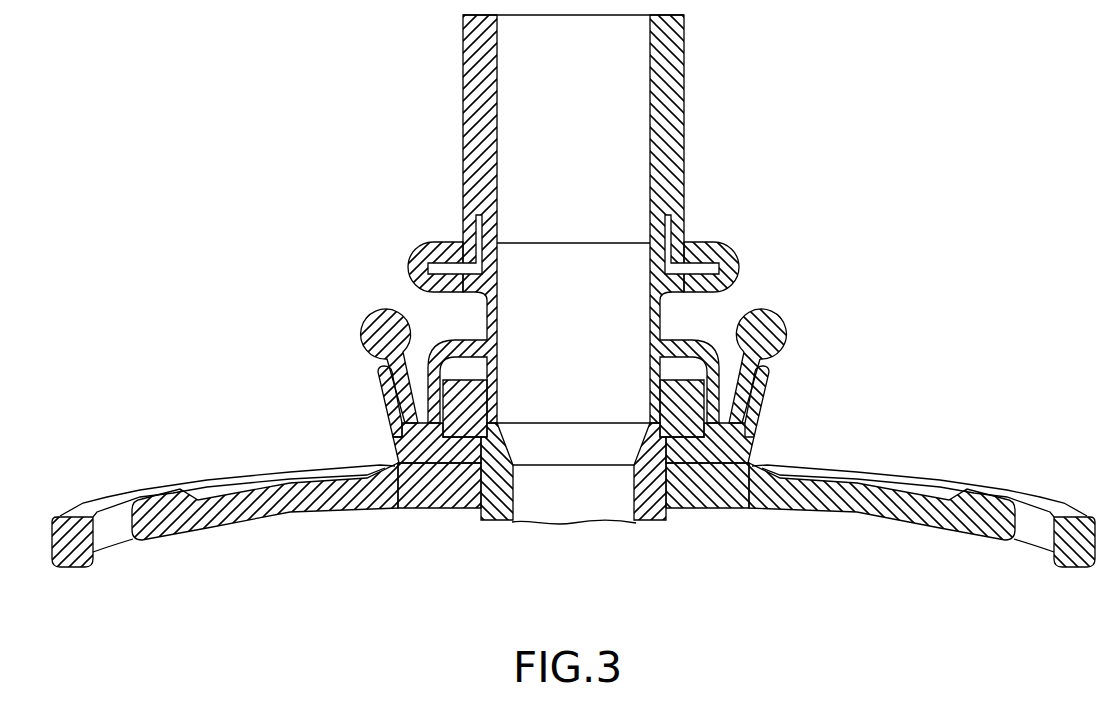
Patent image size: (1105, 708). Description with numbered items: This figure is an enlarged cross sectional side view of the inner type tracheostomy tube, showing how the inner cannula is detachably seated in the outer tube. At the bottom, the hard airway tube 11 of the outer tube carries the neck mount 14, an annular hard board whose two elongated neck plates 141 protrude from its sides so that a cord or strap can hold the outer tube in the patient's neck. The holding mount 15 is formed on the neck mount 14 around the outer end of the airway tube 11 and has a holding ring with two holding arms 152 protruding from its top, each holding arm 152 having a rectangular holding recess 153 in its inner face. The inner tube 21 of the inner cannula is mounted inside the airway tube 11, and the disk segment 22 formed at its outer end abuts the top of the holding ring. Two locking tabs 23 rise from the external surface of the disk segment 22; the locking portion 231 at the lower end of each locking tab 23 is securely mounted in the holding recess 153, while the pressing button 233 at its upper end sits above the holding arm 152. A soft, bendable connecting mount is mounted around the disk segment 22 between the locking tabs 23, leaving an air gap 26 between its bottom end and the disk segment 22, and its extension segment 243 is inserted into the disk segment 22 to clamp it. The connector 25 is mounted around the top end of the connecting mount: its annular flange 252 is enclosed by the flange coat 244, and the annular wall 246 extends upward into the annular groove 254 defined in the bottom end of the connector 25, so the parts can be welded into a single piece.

The airway tube 11 is at (492, 519).
The neck mount 14 is at (440, 501).
The holding mount 15 is at (796, 377).
The inner tube 21 is at (508, 522).
The disk segment 22 is at (485, 401).
The locking tab 23 is at (334, 314).
The connector 25 is at (478, 62).
The air gap 26 is at (682, 369).
The neck plate 141 is at (203, 521).
The holding arm 152 is at (383, 388).
The holding recess 153 is at (407, 419).
The locking portion 231 is at (760, 397).
The pressing button 233 is at (776, 324).
The extension segment 243 is at (642, 406).
The flange coat 244 is at (420, 246).
The annular wall 246 is at (477, 232).
The annular flange 252 is at (712, 251).
The annular groove 254 is at (668, 233).